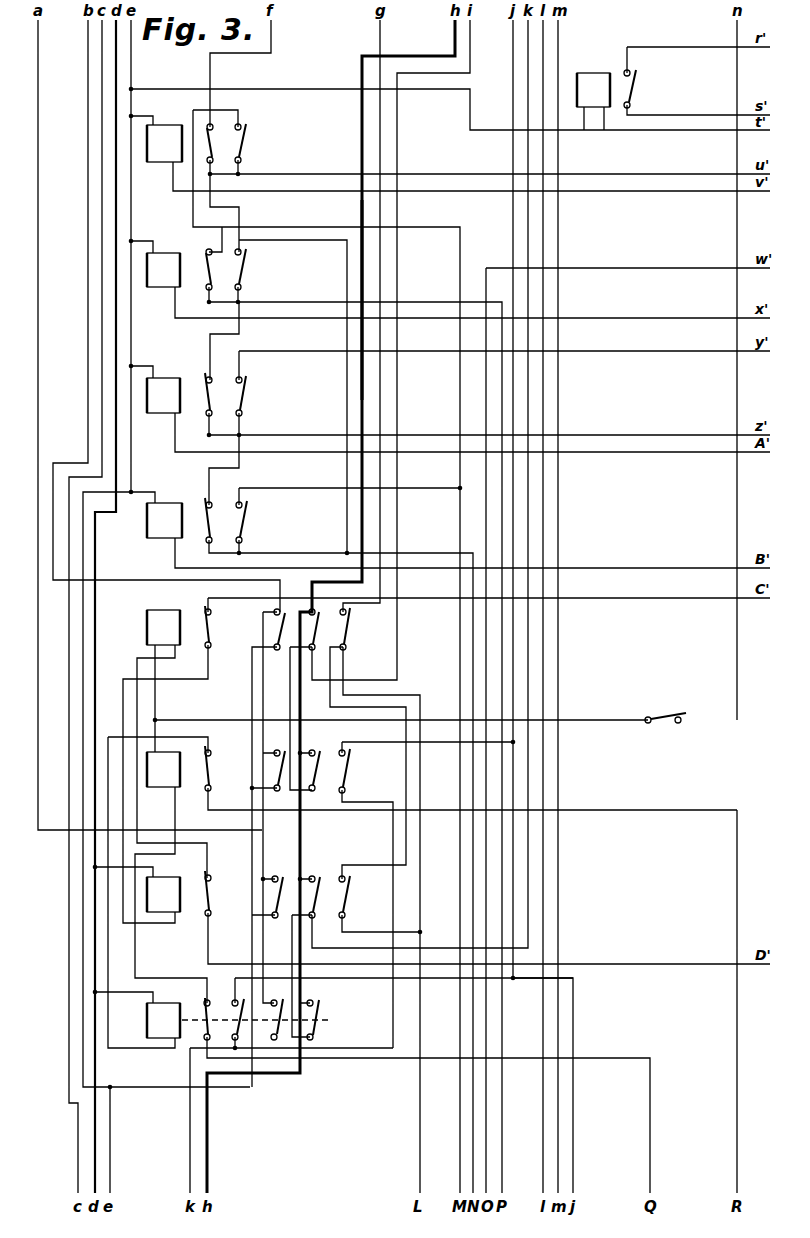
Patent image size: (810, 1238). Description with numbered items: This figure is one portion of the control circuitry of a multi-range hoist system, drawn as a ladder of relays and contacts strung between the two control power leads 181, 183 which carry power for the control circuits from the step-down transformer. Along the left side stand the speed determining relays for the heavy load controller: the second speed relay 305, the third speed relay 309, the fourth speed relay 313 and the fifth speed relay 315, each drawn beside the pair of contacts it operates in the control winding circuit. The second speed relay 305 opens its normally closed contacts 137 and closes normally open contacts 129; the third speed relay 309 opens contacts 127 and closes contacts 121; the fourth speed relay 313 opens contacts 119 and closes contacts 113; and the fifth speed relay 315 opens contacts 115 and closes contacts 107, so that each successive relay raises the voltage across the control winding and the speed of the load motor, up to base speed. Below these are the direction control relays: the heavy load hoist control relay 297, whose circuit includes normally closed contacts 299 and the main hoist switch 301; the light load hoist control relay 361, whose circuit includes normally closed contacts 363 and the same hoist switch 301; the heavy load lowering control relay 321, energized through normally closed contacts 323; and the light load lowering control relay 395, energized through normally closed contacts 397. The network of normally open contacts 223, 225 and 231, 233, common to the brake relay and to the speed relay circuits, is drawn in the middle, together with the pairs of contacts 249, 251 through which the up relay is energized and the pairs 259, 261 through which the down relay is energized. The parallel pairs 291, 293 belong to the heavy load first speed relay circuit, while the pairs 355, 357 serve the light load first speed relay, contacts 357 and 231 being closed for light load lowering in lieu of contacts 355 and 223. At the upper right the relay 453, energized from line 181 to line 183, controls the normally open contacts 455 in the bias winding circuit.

The second speed relay 305 is at (164, 143).
The third speed relay 309 is at (163, 270).
The fourth speed relay 313 is at (163, 395).
The fifth speed relay 315 is at (164, 520).
The heavy load hoist control relay 297 is at (163, 627).
The light load hoist control relay 361 is at (163, 769).
The heavy load lowering control relay 321 is at (163, 894).
The light load lowering control relay 395 is at (163, 1020).
The relay 453 is at (593, 101).
The normally closed contacts 137 is at (207, 124).
The normally open contacts 129 is at (242, 122).
The normally closed contacts 127 is at (207, 249).
The normally open contacts 121 is at (244, 252).
The normally closed contacts 119 is at (211, 378).
The normally open contacts 113 is at (243, 377).
The normally closed contacts 115 is at (211, 503).
The normally open contacts 107 is at (243, 504).
The normally closed contacts 323 is at (211, 611).
The normally open contacts 225 is at (280, 613).
The normally open contacts 249 is at (314, 613).
The normally open contacts 291 is at (346, 611).
The normally closed contacts 397 is at (211, 752).
The normally open contacts 223 is at (278, 750).
The normally open contacts 251 is at (314, 751).
The normally open contacts 355 is at (346, 752).
The normally closed contacts 299 is at (211, 875).
The normally open contacts 233 is at (278, 877).
The normally open contacts 259 is at (314, 877).
The normally open contacts 293 is at (346, 879).
The normally closed contacts 363 is at (210, 1000).
The normally open contacts 357 is at (233, 1004).
The normally open contacts 231 is at (280, 994).
The normally open contacts 261 is at (313, 1002).
The main hoist switch 301 is at (676, 707).
The normally open contacts 455 is at (636, 72).
The control power lead 183 is at (116, 62).
The control power lead 181 is at (362, 131).